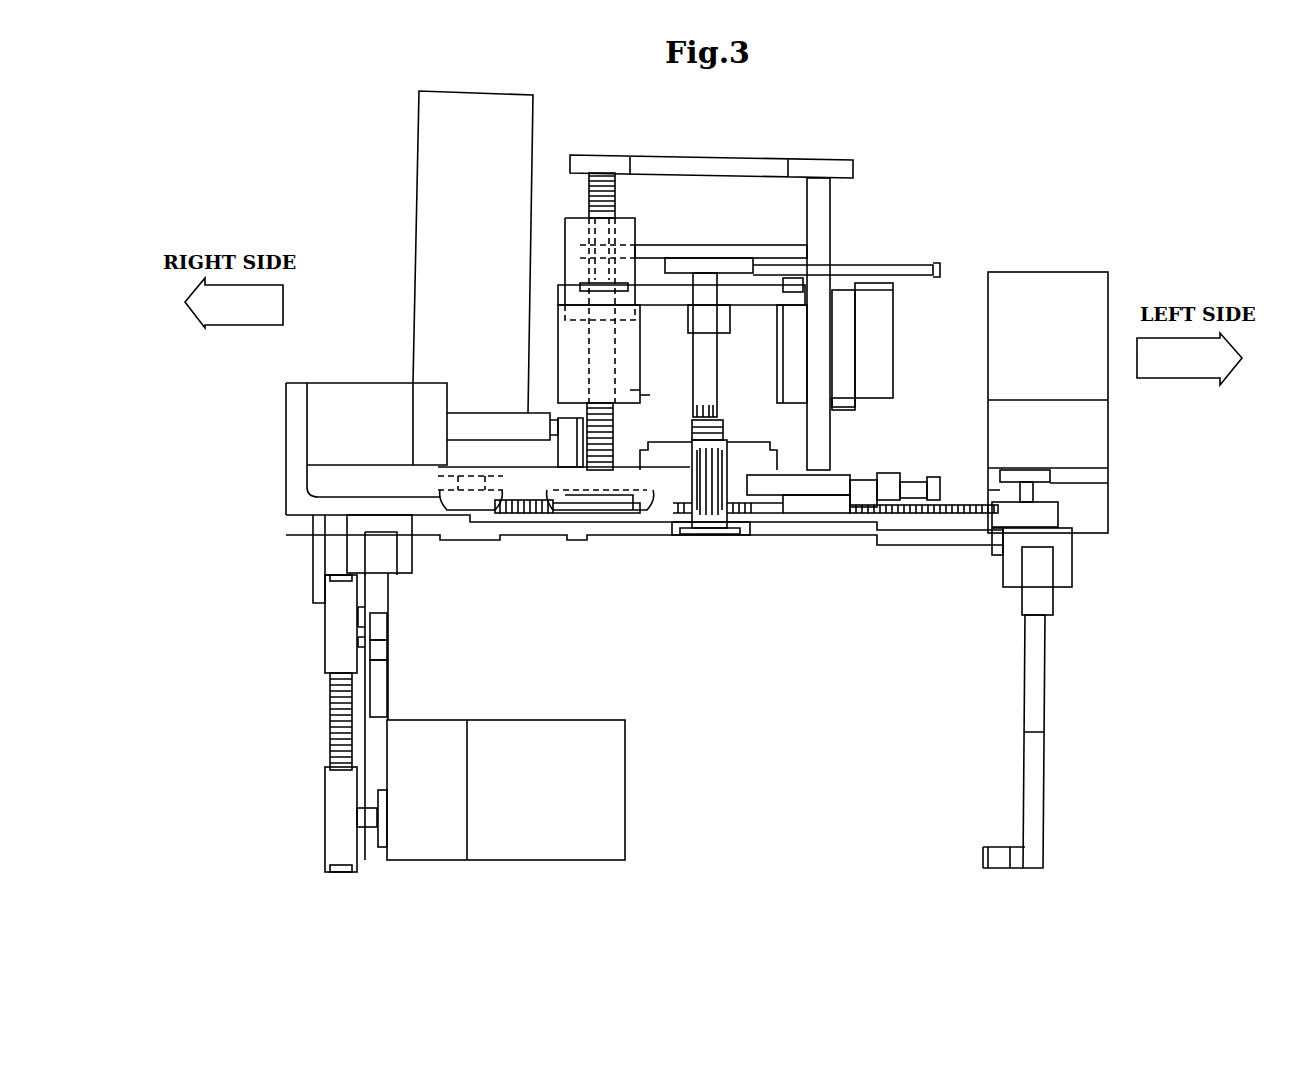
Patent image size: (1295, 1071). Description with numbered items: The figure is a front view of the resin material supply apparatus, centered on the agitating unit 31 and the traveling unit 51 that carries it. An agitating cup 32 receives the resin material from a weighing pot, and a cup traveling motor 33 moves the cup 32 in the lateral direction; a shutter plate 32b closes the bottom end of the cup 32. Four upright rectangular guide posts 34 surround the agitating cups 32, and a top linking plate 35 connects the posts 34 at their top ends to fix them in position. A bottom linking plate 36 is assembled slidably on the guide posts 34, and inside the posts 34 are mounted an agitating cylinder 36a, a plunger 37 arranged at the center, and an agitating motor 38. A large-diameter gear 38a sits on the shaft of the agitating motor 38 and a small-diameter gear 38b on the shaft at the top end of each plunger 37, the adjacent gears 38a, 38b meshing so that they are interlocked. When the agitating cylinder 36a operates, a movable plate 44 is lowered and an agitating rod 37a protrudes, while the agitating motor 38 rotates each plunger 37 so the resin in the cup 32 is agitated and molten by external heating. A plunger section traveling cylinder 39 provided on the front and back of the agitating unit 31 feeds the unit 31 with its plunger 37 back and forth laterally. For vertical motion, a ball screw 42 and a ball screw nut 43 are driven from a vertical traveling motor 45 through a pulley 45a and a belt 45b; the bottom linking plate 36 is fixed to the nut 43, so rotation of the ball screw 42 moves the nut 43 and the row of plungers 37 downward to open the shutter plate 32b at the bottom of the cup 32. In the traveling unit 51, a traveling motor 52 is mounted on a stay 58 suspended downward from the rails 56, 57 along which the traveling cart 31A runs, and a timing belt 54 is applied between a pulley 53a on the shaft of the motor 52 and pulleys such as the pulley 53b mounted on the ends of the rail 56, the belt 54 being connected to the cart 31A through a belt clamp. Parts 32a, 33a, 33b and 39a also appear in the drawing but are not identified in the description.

The agitating unit 31 is at (982, 140).
The traveling cart 31A is at (360, 528).
The agitating cup 32 is at (747, 488).
The collet holder 32a is at (742, 450).
The shutter plate 32b is at (710, 534).
The cup traveling motor 33 is at (1040, 272).
The coupling 33a is at (1047, 500).
The feed screw 33b is at (977, 530).
The guide post 34 is at (830, 215).
The top linking plate 35 is at (780, 155).
The bottom linking plate 36 is at (657, 305).
The agitating cylinder 36a is at (636, 380).
The plunger 37 is at (720, 370).
The agitating rod 37a is at (672, 535).
The agitating motor 38 is at (893, 325).
The large-diameter gear 38a is at (895, 272).
The small-diameter gear 38b is at (740, 270).
The plunger section traveling cylinder 39 is at (370, 383).
The nut 39a is at (900, 475).
The ball screw 42 is at (597, 190).
The ball screw nut 43 is at (565, 245).
The movable plate 44 is at (660, 250).
The vertical traveling motor 45 is at (425, 208).
The pulley 45a is at (468, 507).
The belt 45b is at (525, 510).
The traveling unit 51 is at (262, 775).
The traveling motor 52 is at (540, 722).
The pulley 53a is at (325, 815).
The pulley 53b is at (333, 628).
The timing belt 54 is at (330, 712).
The rail 56 is at (375, 557).
The rail 57 is at (1045, 598).
The stay 58 is at (383, 680).